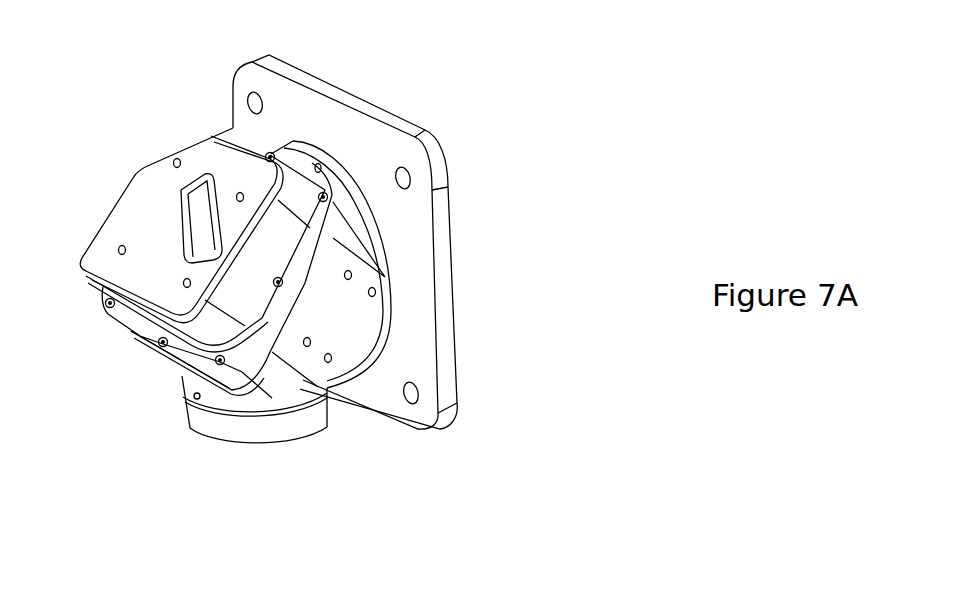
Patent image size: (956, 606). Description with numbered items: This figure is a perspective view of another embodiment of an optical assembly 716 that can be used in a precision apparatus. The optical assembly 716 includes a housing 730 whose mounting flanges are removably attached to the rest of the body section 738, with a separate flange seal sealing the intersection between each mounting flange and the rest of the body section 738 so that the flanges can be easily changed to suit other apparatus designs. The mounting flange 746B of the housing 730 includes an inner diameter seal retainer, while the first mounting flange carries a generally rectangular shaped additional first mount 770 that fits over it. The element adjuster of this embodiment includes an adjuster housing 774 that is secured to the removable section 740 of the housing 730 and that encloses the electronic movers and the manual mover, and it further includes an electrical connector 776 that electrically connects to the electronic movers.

The optical assembly 716 is at (484, 135).
The additional first mount 770 is at (442, 247).
The housing 730 is at (319, 382).
The body section 738 is at (350, 368).
The removable section 740 is at (180, 361).
The second mounting flange 746B is at (273, 438).
The adjuster housing 774 is at (130, 216).
The electrical connector 776 is at (212, 208).